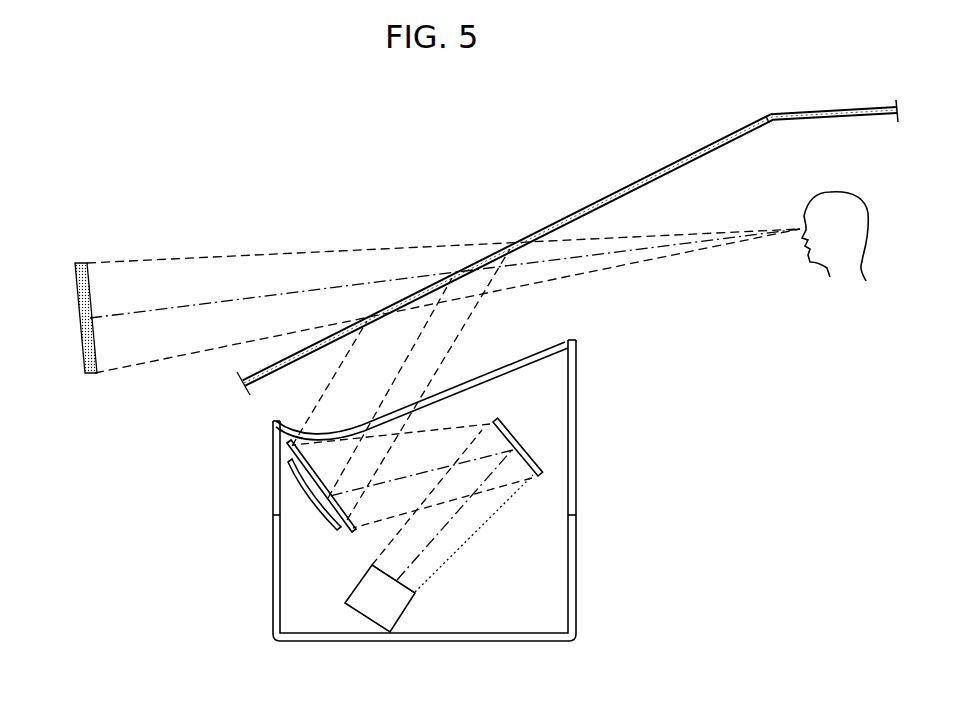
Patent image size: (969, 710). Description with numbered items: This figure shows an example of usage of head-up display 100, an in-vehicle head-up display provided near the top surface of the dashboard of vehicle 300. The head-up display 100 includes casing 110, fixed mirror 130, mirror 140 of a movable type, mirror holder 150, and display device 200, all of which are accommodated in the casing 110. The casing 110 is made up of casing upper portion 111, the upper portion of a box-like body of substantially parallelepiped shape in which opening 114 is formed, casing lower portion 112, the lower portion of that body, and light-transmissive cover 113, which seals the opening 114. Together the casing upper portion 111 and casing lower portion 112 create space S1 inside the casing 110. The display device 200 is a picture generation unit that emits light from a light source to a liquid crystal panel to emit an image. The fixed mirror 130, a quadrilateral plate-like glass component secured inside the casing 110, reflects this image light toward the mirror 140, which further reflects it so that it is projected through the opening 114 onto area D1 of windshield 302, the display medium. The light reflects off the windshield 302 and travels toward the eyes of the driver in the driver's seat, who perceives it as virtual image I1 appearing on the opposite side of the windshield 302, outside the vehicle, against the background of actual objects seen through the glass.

The head-up display 100 is at (457, 486).
The casing 110 is at (503, 465).
The casing upper portion 111 is at (577, 453).
The casing lower portion 112 is at (578, 527).
The light-transmissive cover 113 is at (577, 368).
The opening 114 is at (557, 343).
The fixed mirror 130 is at (522, 444).
The mirror of a movable type 140 is at (318, 500).
The mirror holder 150 is at (298, 492).
The display device 200 is at (363, 614).
The vehicle 300 is at (811, 108).
The windshield 302 is at (647, 176).
The area D1 is at (467, 244).
The space S1 is at (540, 622).
The virtual image I1 is at (84, 357).